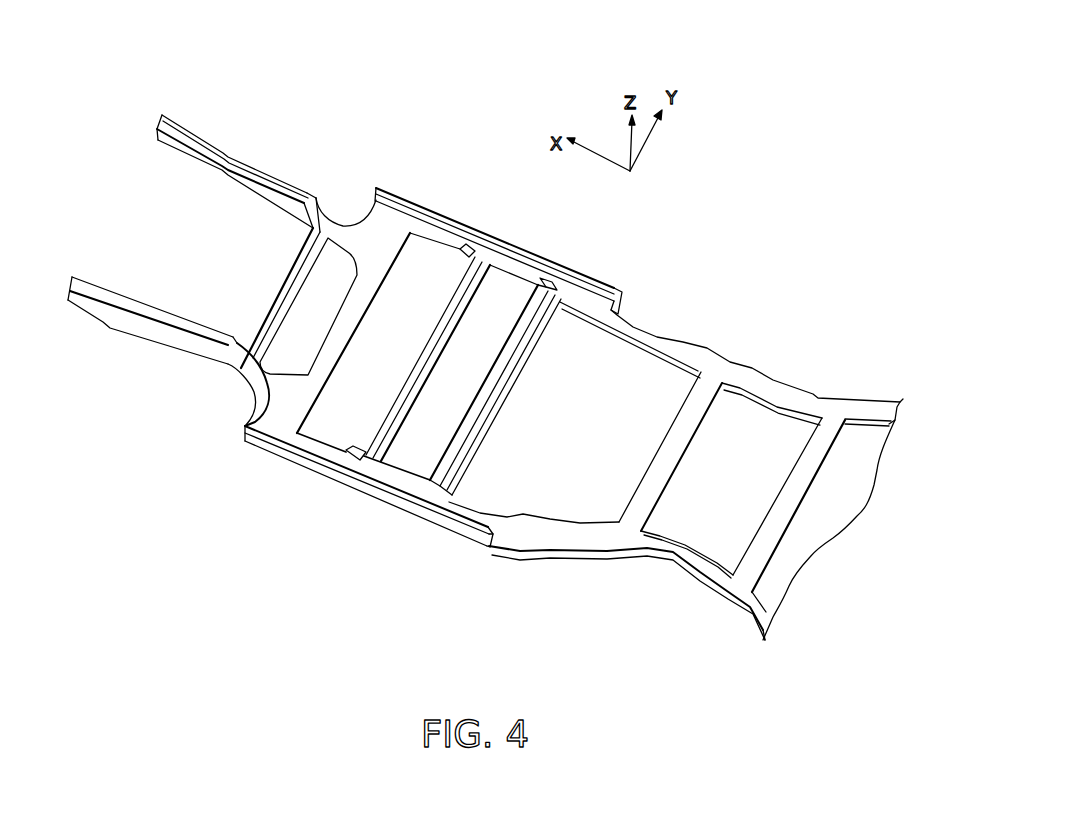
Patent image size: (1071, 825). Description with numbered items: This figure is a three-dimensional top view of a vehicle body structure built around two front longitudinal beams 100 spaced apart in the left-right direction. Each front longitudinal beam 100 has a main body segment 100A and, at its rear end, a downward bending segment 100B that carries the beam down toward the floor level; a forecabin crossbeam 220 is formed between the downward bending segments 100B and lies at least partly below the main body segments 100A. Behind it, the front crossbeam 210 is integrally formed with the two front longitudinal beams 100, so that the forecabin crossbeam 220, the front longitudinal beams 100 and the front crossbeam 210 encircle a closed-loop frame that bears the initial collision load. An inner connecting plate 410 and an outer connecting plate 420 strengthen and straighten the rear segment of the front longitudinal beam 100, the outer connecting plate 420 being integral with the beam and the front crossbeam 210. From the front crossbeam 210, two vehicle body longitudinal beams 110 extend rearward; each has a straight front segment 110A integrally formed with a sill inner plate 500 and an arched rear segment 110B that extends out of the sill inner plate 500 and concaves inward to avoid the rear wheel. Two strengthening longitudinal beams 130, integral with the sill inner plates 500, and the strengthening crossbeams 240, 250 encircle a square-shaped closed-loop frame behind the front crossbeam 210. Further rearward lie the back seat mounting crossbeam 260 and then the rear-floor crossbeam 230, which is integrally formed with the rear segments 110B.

The front longitudinal beam 100 is at (178, 231).
The main body segment 100A is at (184, 343).
The downward bending segment 100B is at (252, 378).
The vehicle body longitudinal beam 110 is at (676, 446).
The front segment of the vehicle body longitudinal beam 110A is at (573, 314).
The rear segment of the vehicle body longitudinal beam 110B is at (733, 362).
The strengthening longitudinal beam 130 is at (517, 281).
The front crossbeam 210 is at (345, 333).
The forecabin crossbeam 220 is at (287, 289).
The rear-floor crossbeam 230 is at (790, 497).
The strengthening crossbeam 240 is at (408, 383).
The strengthening crossbeam 250 is at (493, 397).
The back seat mounting crossbeam 260 is at (666, 447).
The inner connecting plate 410 is at (357, 257).
The outer connecting plate 420 is at (365, 200).
The sill inner plate 500 is at (467, 230).